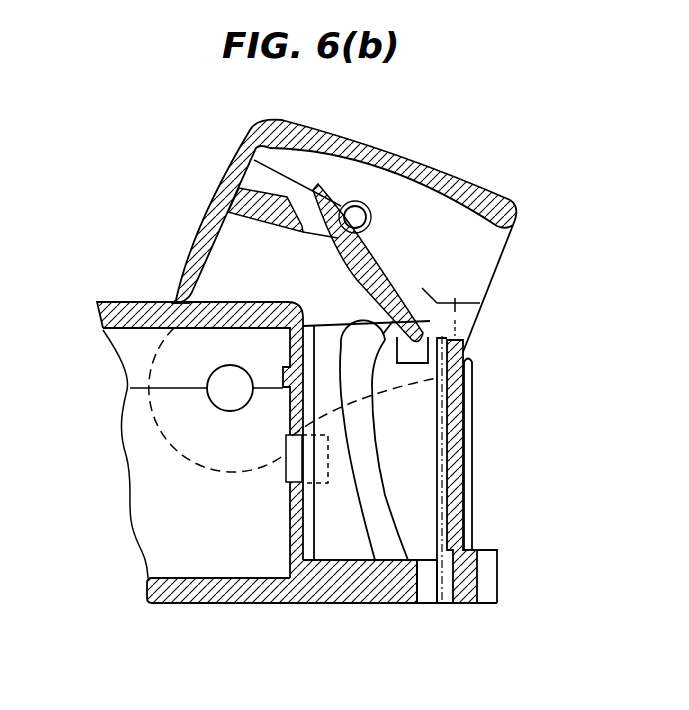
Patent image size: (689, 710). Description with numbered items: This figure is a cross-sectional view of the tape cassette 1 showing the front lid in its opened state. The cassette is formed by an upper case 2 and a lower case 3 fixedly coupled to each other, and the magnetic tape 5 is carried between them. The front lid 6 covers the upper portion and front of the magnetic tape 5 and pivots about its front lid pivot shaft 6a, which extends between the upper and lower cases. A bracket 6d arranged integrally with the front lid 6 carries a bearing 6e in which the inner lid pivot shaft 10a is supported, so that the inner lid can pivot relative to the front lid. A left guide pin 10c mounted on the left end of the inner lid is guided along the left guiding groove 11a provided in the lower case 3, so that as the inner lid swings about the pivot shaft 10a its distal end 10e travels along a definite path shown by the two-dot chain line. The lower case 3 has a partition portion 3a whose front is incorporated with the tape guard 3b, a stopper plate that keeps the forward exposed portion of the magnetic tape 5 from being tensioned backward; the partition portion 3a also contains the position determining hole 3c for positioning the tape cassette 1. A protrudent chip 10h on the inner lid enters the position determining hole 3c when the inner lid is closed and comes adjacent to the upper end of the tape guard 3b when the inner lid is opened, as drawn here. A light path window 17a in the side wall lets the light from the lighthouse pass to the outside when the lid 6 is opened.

The tape cassette 1 is at (72, 671).
The upper case 2 is at (108, 302).
The lower case 3 is at (177, 602).
The partition portion 3a is at (362, 562).
The tape guard 3b is at (455, 425).
The position determining hole 3c is at (437, 592).
The magnetic tape 5 is at (472, 467).
The front lid 6 is at (401, 156).
The front lid pivot shaft 6a is at (223, 385).
The bracket 6d is at (258, 182).
The bearing 6e is at (350, 205).
The inner lid pivot shaft 10a is at (340, 192).
The left guide pin 10c is at (352, 320).
The distal end 10e is at (456, 307).
The protrudent chip 10h is at (430, 321).
The left guiding groove 11a is at (366, 517).
The light path window 17a is at (287, 470).